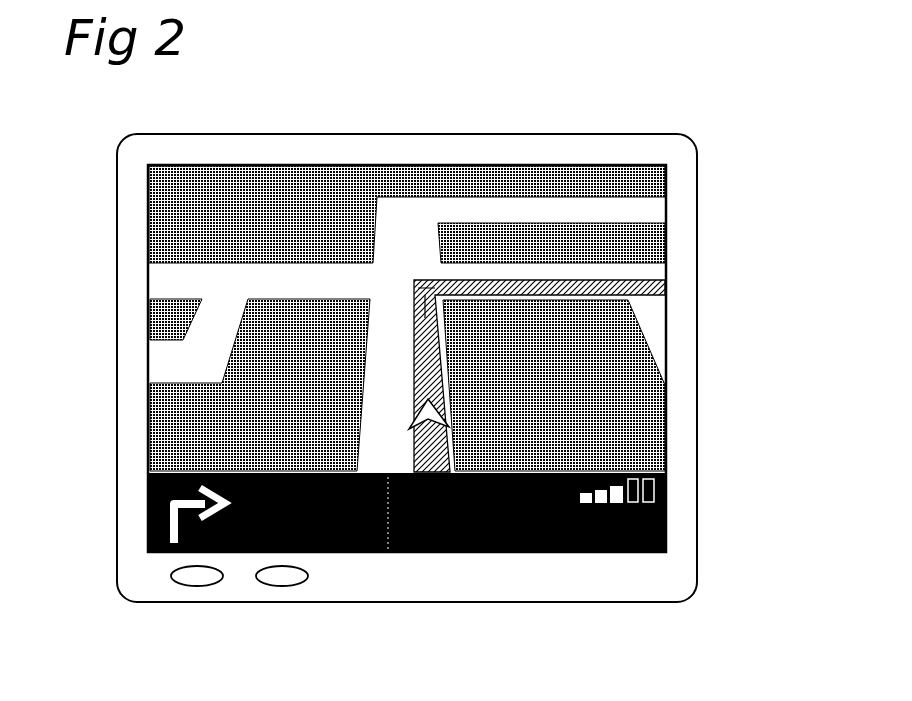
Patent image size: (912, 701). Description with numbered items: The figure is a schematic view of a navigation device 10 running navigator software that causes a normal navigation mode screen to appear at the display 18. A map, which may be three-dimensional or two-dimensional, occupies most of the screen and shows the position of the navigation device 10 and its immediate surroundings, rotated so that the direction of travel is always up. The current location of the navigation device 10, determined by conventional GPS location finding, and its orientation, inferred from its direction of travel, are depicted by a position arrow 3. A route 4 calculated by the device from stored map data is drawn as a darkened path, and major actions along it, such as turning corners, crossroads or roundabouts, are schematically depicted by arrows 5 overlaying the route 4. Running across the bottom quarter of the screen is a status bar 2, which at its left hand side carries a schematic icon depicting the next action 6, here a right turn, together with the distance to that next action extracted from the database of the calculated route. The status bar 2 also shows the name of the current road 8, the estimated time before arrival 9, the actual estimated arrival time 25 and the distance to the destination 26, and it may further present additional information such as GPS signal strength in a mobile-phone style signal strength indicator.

The status bar 2 is at (668, 503).
The position arrow 3 is at (425, 418).
The route 4 is at (430, 375).
The arrows 5 is at (412, 279).
The next action 6 is at (141, 539).
The current road 8 is at (480, 546).
The estimated time before arrival 9 is at (388, 520).
The navigation device 10 is at (708, 187).
The display 18 is at (607, 190).
The estimated arrival time 25 is at (553, 496).
The distance to the destination 26 is at (390, 483).